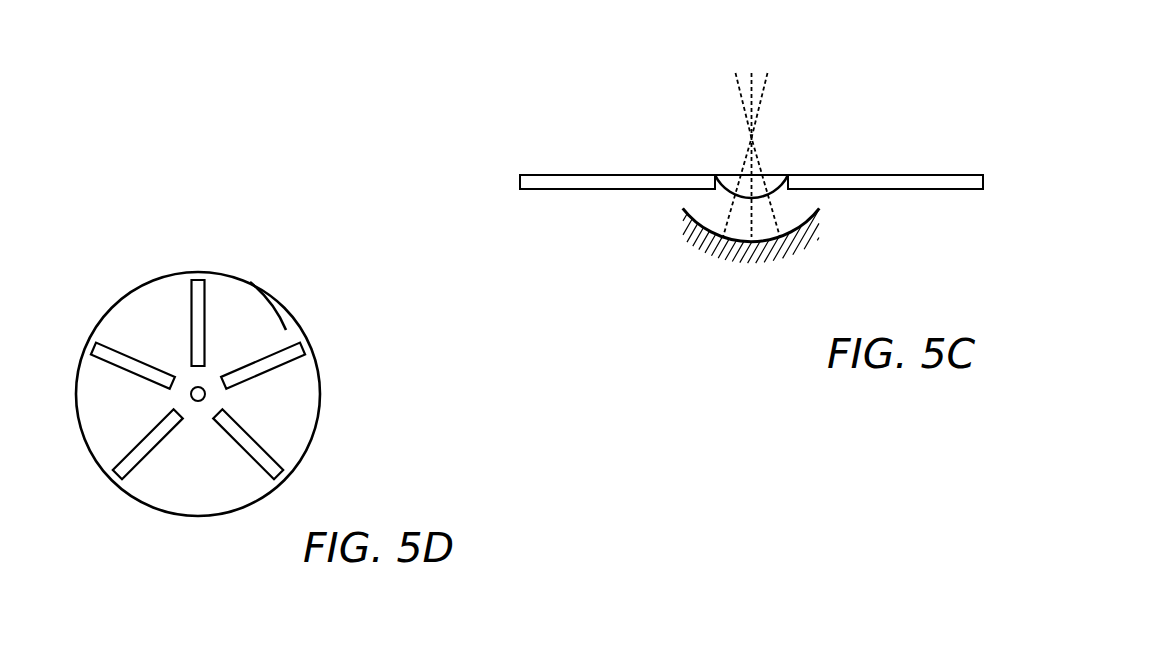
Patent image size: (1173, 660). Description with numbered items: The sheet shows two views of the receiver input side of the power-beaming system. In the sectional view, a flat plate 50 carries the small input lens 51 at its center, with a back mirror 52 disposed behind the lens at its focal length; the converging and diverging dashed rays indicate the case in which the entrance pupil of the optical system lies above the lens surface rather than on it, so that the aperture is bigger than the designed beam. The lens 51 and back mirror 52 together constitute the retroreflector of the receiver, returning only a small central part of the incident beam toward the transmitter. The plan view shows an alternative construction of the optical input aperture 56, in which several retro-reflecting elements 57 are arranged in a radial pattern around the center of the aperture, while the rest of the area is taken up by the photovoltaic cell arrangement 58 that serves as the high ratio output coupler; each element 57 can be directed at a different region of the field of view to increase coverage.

In FIG. 5C, the housing plate 50 is at (932, 189).
In FIG. 5C, the input lens 51 is at (778, 174).
In FIG. 5C, the back mirror 52 is at (810, 252).
In FIG. 5D, the optical input aperture 56 is at (317, 370).
In FIG. 5D, the retro-reflecting elements 57 is at (302, 346).
In FIG. 5D, the photovoltaic cell arrangement 58 is at (290, 323).